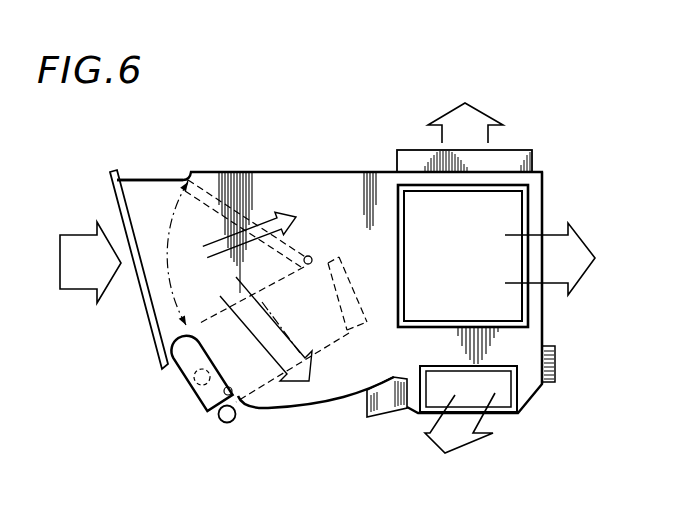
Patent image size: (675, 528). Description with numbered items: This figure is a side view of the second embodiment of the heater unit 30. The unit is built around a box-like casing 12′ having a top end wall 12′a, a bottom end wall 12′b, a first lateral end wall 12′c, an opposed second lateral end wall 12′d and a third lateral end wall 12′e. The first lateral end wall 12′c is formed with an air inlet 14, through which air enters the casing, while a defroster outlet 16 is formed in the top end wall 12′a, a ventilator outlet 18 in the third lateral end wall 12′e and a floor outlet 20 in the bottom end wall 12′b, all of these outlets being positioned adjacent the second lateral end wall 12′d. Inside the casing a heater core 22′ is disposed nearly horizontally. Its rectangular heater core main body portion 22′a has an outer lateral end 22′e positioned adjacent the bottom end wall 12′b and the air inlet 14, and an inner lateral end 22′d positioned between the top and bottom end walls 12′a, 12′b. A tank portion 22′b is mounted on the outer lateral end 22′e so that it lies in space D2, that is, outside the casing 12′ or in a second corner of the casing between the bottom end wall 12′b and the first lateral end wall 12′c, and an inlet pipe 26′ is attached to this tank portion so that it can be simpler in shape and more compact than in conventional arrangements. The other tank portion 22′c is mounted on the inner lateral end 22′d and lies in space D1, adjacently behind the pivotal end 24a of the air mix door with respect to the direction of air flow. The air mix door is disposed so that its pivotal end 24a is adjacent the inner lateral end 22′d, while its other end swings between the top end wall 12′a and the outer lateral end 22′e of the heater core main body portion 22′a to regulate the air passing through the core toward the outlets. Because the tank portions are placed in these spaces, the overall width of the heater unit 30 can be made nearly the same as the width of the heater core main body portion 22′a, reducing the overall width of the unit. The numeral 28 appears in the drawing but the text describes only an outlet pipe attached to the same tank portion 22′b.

The heater unit 30 is at (537, 104).
The casing 12′ is at (265, 163).
The top end wall 12′a is at (316, 173).
The bottom end wall 12′b is at (343, 403).
The first lateral end wall 12′c is at (115, 192).
The second lateral end wall 12′d is at (545, 312).
The third lateral end wall 12′e is at (366, 182).
The air inlet 14 is at (147, 307).
The defroster outlet 16 is at (523, 151).
The ventilator outlet 18 is at (520, 212).
The floor outlet 20 is at (387, 406).
The heater core 22′ is at (188, 417).
The heater core main body portion 22′a is at (272, 374).
The tank portion 22′b is at (235, 412).
The tank portion 22′c is at (343, 337).
The inner lateral end 22′d is at (360, 327).
The outer lateral end 22′e is at (246, 405).
The pivotal end 24a is at (309, 256).
The inlet pipe 26′ is at (222, 424).
The pivot pin 28 is at (196, 382).
The space D1 is at (344, 272).
The space D2 is at (186, 357).